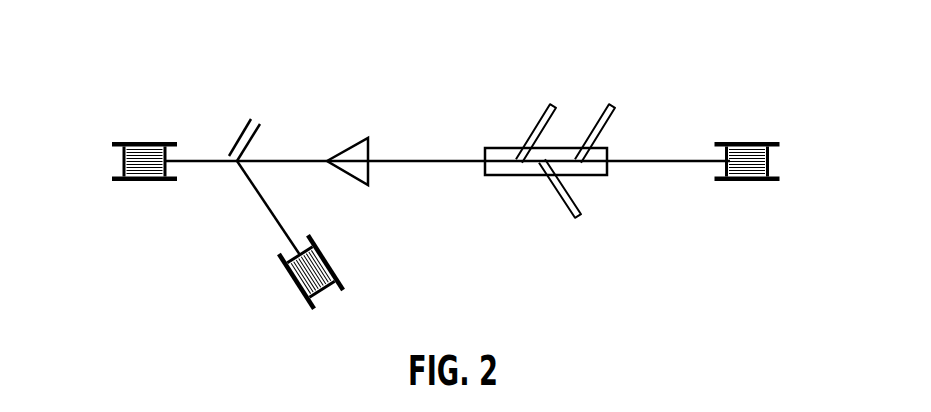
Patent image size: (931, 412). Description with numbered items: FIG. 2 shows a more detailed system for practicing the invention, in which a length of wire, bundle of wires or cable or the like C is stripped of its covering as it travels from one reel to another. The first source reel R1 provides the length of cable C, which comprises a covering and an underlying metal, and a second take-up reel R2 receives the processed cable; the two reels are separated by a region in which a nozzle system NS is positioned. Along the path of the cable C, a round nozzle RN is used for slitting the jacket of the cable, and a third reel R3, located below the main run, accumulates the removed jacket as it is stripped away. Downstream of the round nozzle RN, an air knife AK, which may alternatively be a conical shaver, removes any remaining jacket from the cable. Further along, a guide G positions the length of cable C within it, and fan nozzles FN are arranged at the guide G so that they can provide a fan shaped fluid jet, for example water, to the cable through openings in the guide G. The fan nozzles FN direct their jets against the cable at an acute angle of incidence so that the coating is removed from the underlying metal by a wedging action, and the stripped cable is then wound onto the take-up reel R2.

The first source reel R1 is at (145, 132).
The second take-up reel R2 is at (758, 136).
The third reel R3 is at (283, 289).
The round nozzle RN is at (261, 111).
The length of wire, bundle of wires or cable or the like C is at (411, 157).
The air knife AK is at (371, 190).
The guide G is at (605, 178).
The fan nozzle FN is at (557, 101).
The nozzle system NS is at (655, 111).